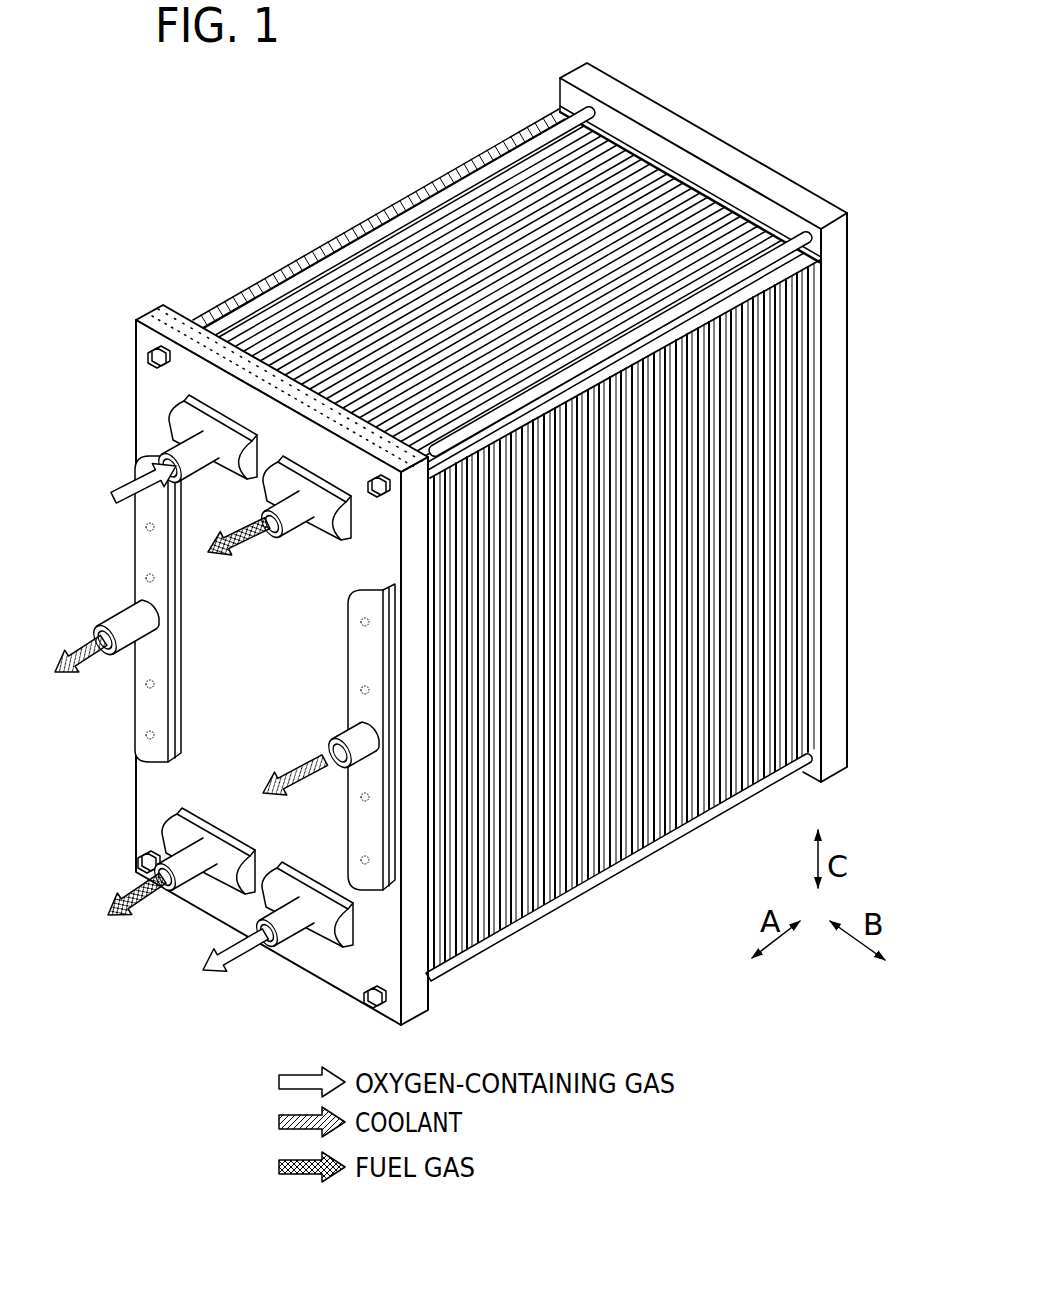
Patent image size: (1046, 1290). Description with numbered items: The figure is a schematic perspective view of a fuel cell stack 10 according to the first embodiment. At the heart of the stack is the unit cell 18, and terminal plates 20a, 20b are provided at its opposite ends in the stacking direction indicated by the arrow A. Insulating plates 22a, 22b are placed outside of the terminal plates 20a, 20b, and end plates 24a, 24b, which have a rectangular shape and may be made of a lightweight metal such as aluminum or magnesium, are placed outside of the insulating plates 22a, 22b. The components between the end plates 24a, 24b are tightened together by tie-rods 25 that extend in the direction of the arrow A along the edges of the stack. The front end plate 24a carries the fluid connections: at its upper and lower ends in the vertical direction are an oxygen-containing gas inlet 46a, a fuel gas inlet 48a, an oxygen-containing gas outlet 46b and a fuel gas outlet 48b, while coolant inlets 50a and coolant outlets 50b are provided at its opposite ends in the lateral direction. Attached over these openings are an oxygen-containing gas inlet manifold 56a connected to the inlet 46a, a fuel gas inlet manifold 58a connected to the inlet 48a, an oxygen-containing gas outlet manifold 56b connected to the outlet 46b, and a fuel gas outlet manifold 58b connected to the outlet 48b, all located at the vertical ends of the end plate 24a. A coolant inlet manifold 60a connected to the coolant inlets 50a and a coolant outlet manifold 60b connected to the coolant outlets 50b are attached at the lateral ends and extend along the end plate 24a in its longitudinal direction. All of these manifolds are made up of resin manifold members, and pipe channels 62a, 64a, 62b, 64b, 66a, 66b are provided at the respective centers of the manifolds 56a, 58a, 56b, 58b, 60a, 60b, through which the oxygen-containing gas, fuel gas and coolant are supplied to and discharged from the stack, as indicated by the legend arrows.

The fuel cell stack 10 is at (621, 19).
The unit cell 18 is at (352, 212).
The terminal plate 20a is at (236, 322).
The terminal plate 20b is at (716, 207).
The insulating plate 22a is at (192, 320).
The insulating plate 22b is at (748, 222).
The end plate 24a is at (146, 314).
The end plate 24b is at (788, 206).
The tie-rod 25 is at (457, 187).
The oxygen-containing gas inlet 46a is at (183, 398).
The oxygen-containing gas outlet 46b is at (338, 948).
The fuel gas inlet 48a is at (292, 542).
The fuel gas outlet 48b is at (170, 830).
The coolant inlet 50a is at (140, 526).
The coolant outlet 50b is at (365, 622).
The oxygen-containing gas inlet manifold 56a is at (182, 425).
The oxygen-containing gas outlet manifold 56b is at (285, 890).
The fuel gas inlet manifold 58a is at (330, 516).
The fuel gas outlet manifold 58b is at (226, 850).
The coolant inlet manifold 60a is at (152, 553).
The coolant outlet manifold 60b is at (367, 648).
The pipe channel 62a is at (201, 468).
The pipe channel 62b is at (296, 935).
The pipe channel 64a is at (286, 526).
The pipe channel 64b is at (196, 882).
The pipe channel 66a is at (122, 615).
The pipe channel 66b is at (337, 743).